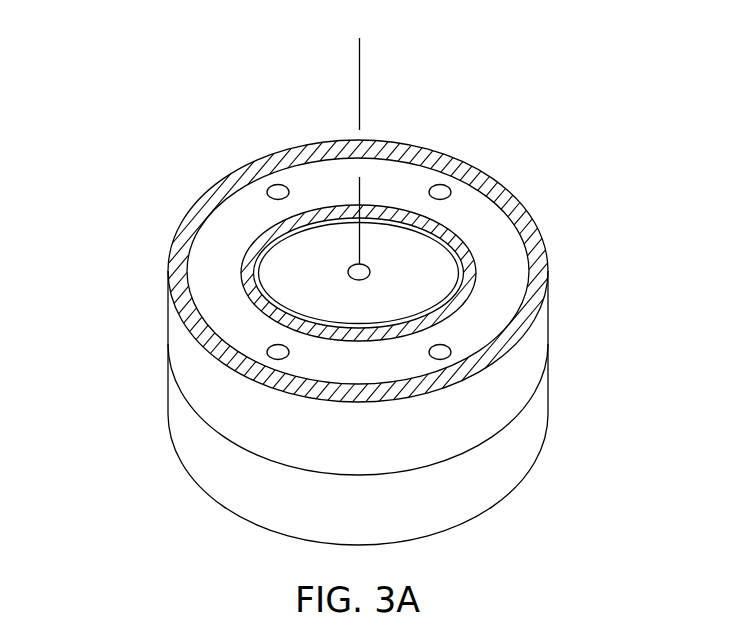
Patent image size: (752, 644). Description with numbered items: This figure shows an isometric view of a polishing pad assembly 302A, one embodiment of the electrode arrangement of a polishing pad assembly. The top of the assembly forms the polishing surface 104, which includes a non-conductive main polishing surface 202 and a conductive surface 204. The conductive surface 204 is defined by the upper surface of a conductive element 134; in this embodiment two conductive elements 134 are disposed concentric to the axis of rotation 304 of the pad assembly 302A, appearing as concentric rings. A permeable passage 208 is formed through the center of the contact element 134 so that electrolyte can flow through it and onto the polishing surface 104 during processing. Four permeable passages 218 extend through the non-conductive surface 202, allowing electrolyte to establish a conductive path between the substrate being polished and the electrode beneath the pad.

The polishing pad assembly 302A is at (625, 316).
The polishing surface 104 is at (202, 262).
The non-conductive main polishing surface 202 is at (226, 217).
The conductive surface 204 is at (422, 160).
The conductive element 134 is at (420, 222).
The permeable passage 218 is at (278, 184).
The permeable passage 208 is at (348, 266).
The axis of rotation 304 is at (360, 80).